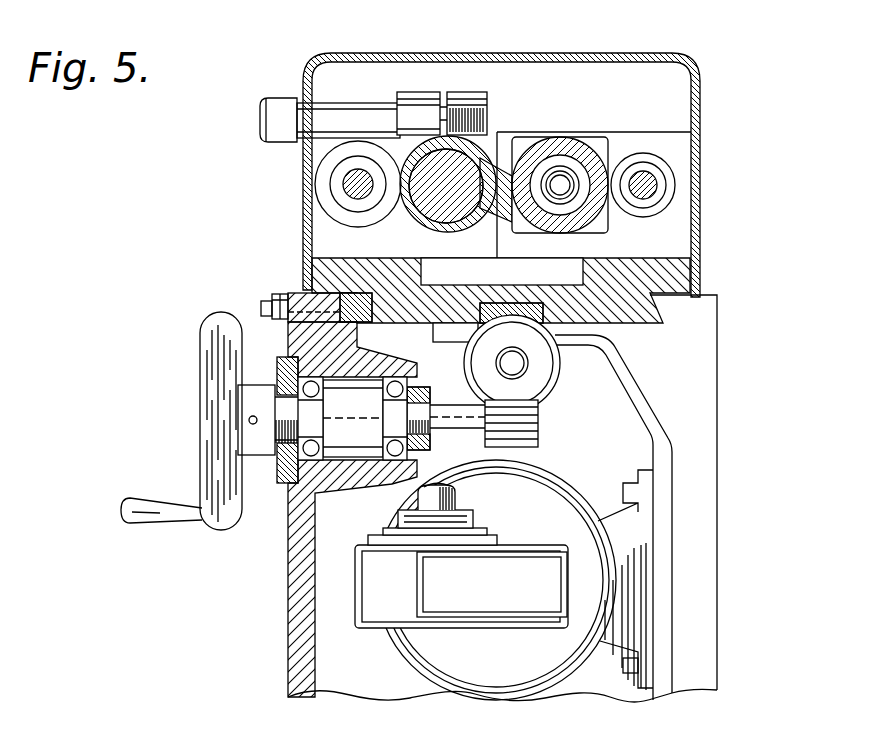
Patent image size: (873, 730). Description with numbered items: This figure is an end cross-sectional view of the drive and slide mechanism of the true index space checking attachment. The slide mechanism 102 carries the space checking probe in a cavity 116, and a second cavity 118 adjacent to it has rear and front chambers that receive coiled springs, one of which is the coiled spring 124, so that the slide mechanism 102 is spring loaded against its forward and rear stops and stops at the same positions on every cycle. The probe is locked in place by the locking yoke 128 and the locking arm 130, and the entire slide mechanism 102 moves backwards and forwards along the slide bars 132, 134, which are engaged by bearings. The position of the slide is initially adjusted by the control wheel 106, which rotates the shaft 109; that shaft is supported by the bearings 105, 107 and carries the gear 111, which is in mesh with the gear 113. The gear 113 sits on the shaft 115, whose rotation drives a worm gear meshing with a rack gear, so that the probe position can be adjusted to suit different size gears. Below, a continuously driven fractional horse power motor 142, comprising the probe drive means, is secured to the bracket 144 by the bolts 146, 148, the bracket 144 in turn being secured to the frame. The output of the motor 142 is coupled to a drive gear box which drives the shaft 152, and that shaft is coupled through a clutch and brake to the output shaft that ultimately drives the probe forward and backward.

The slide mechanism 102 is at (558, 143).
The bearing 105 is at (313, 456).
The control wheel 106 is at (212, 457).
The bearing 107 is at (396, 453).
The shaft 109 is at (450, 405).
The gear 111 is at (537, 434).
The gear 113 is at (562, 357).
The shaft 115 is at (516, 366).
The cavity 116 is at (430, 212).
The second cavity 118 is at (574, 158).
The coiled spring 124 is at (571, 214).
The locking yoke 128 is at (418, 92).
The locking arm 130 is at (273, 98).
The slide bar 132 is at (652, 187).
The slide bar 134 is at (349, 184).
The motor 142 is at (512, 666).
The bracket 144 is at (663, 566).
The bolt 146 is at (638, 492).
The bolt 148 is at (628, 666).
The shaft 152 is at (458, 493).